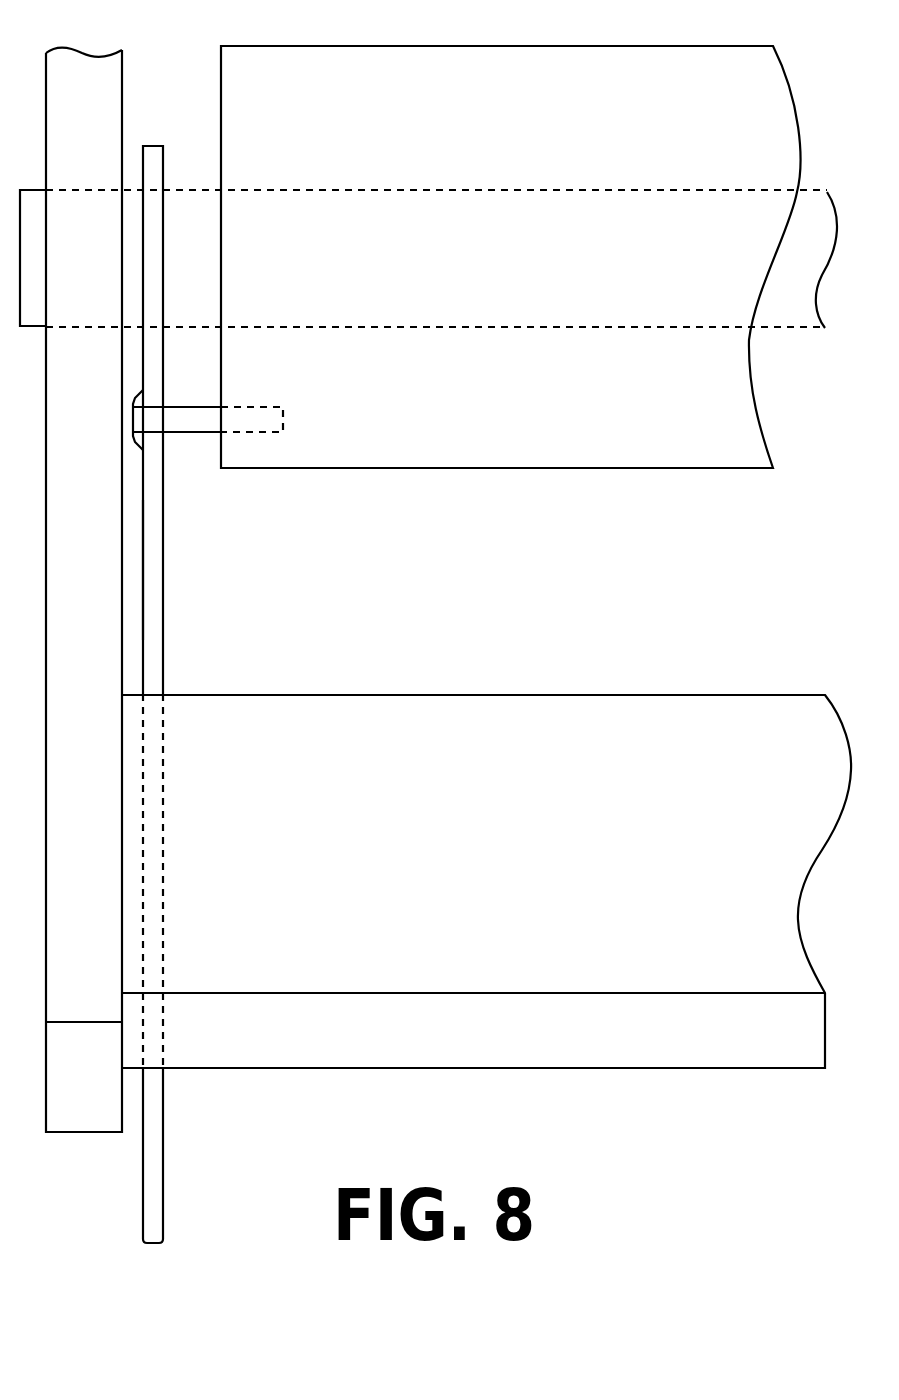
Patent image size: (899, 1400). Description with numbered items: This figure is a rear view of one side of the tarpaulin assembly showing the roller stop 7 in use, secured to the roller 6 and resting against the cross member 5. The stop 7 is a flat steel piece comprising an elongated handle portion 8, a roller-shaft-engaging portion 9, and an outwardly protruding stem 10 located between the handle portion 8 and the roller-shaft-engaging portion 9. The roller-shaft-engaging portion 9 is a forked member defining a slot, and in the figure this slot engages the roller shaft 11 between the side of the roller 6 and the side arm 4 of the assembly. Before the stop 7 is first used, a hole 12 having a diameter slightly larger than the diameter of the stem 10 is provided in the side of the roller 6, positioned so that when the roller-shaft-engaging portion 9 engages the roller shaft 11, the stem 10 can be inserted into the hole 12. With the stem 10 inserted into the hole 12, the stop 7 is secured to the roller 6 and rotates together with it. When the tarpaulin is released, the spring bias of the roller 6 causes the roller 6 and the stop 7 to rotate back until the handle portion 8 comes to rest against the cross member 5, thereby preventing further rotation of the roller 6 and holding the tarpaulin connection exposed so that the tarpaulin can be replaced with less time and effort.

The side arm 4 is at (102, 685).
The cross member 5 is at (546, 720).
The roller 6 is at (647, 445).
The roller stop 7 is at (178, 567).
The handle portion 8 is at (152, 1130).
The roller-shaft-engaging portion 9 is at (152, 157).
The stem 10 is at (197, 425).
The roller shaft 11 is at (773, 322).
The hole 12 is at (221, 407).